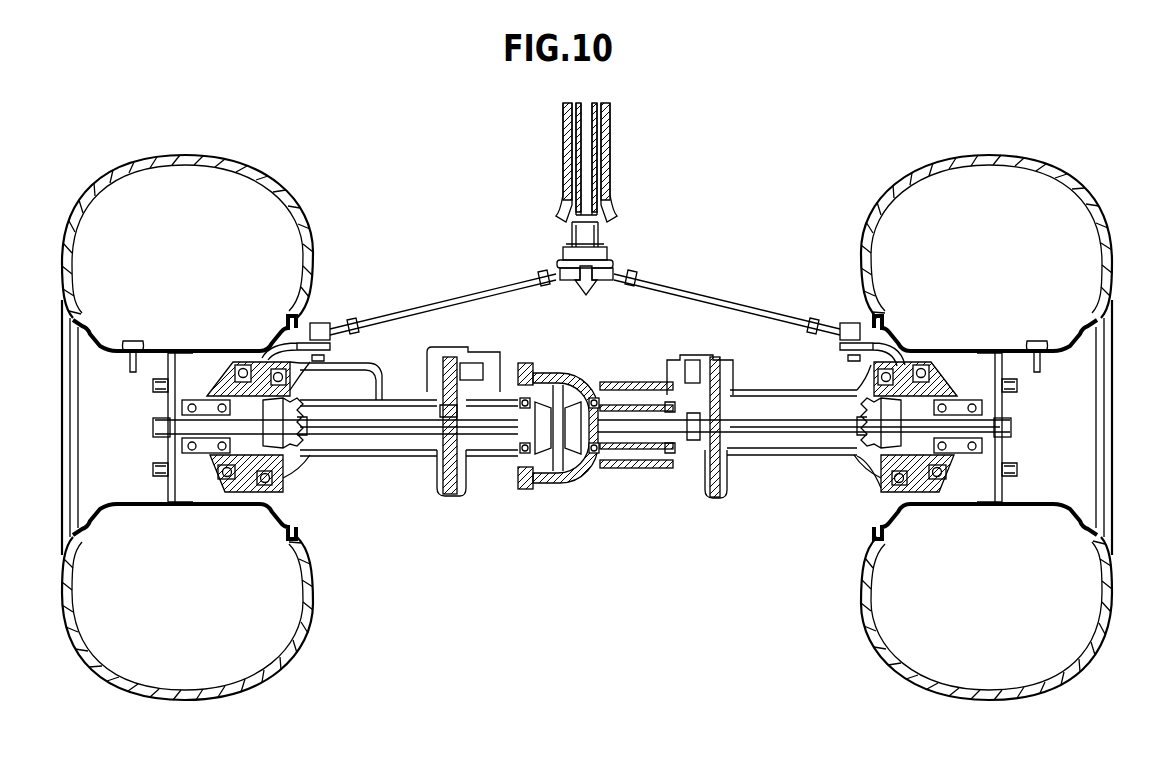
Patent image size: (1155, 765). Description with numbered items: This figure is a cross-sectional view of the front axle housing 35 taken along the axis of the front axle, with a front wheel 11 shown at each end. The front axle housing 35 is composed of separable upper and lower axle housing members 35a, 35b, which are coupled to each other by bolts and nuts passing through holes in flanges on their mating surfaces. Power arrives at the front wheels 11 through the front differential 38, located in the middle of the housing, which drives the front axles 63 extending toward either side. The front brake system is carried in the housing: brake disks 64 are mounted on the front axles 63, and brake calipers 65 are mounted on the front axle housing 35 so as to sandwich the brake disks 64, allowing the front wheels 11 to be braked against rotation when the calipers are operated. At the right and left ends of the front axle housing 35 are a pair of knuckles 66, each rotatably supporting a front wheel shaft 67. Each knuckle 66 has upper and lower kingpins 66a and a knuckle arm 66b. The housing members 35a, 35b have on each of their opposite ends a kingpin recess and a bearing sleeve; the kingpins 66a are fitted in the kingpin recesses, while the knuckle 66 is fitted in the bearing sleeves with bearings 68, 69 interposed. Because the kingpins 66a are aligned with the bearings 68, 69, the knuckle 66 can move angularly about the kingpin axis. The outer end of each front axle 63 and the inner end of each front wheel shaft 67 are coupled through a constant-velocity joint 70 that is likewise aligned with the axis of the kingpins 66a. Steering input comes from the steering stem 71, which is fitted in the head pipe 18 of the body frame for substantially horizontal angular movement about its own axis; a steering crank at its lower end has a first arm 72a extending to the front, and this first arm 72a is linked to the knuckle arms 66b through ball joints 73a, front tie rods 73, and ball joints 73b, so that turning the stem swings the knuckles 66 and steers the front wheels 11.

The front wheel 11 is at (212, 158).
The head pipe 18 is at (608, 142).
The steering stem 71 is at (586, 122).
The first arm 72a is at (607, 258).
The front tie rod 73 is at (450, 302).
The ball joint 73a is at (589, 293).
The ball joint 73b is at (326, 327).
The brake caliper 65 is at (468, 378).
The front differential 38 is at (553, 385).
The knuckle 66 is at (220, 457).
The kingpin 66a is at (260, 373).
The knuckle arm 66b is at (326, 349).
The front axle housing 35 is at (770, 477).
The upper axle housing member 35a is at (377, 394).
The lower axle housing member 35b is at (352, 456).
The front axle 63 is at (392, 430).
The brake disk 64 is at (463, 497).
The bearing 69 is at (272, 478).
The bearing 68 is at (237, 370).
The constant-velocity joint 70 is at (175, 418).
The front wheel shaft 67 is at (168, 443).